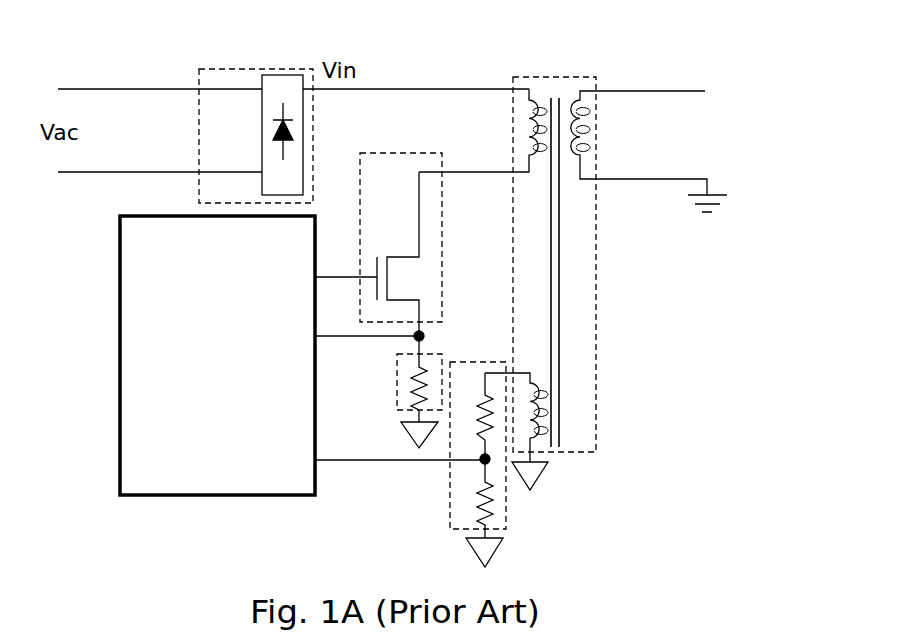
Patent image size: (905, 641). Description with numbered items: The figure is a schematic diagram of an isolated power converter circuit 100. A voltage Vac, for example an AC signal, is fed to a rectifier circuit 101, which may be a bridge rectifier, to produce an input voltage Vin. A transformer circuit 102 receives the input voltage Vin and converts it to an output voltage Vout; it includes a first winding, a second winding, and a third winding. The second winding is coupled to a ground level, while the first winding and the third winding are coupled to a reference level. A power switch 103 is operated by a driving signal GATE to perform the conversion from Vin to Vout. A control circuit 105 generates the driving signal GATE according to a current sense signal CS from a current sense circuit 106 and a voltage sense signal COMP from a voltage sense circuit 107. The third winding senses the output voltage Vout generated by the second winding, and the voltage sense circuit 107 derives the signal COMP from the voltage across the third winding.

The isolated power converter circuit 100 is at (777, 60).
The rectifier circuit 101 is at (242, 199).
The transformer circuit 102 is at (567, 76).
The power switch 103 is at (403, 188).
The control circuit 105 is at (173, 486).
The current sense circuit 106 is at (395, 379).
The voltage sense circuit 107 is at (450, 483).